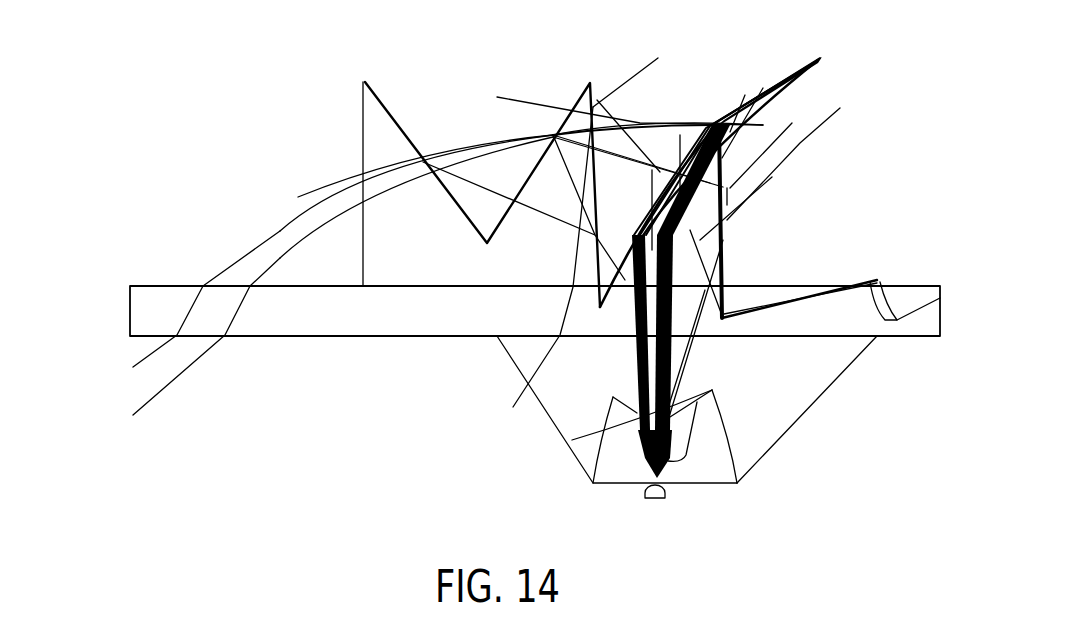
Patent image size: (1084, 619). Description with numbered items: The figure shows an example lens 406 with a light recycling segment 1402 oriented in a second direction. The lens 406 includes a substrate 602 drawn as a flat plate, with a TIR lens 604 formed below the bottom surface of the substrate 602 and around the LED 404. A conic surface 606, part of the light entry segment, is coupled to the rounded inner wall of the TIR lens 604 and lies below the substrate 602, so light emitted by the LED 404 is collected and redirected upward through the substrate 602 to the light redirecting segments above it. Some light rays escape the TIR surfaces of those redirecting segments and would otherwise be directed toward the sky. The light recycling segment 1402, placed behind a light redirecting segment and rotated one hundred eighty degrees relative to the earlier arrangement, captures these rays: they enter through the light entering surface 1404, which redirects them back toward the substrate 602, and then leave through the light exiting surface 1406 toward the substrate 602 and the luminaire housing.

The substrate 602 is at (130, 284).
The TIR lens 604 is at (547, 430).
The conic surface 606 is at (767, 437).
The LED 404 is at (667, 497).
The lens 406 is at (867, 150).
The light recycling segment 1402 is at (365, 82).
The light entering surface 1404 is at (395, 123).
The light exiting surface 1406 is at (362, 133).